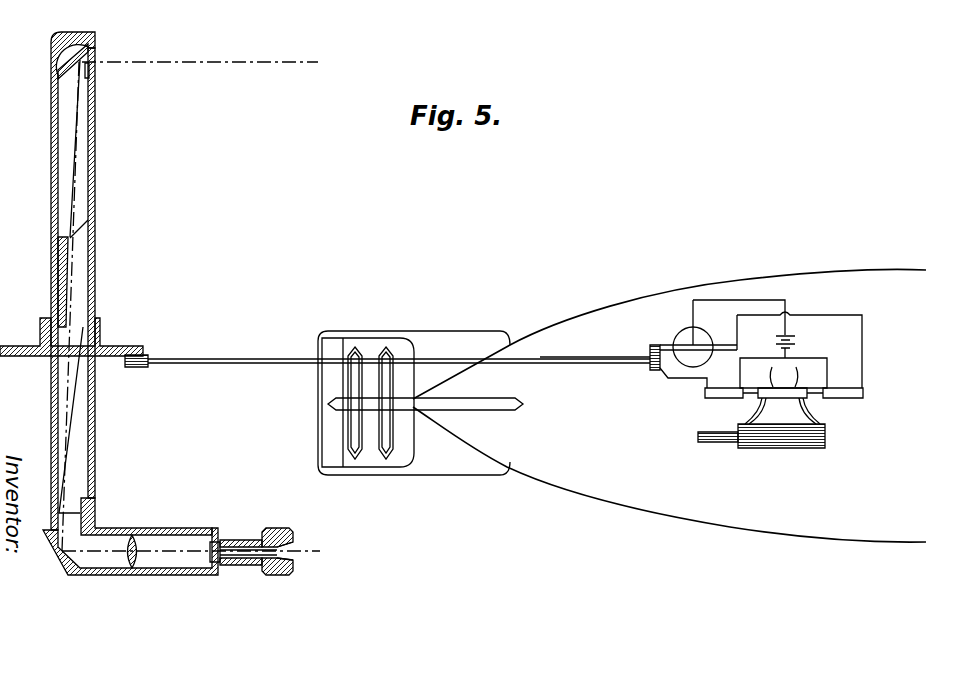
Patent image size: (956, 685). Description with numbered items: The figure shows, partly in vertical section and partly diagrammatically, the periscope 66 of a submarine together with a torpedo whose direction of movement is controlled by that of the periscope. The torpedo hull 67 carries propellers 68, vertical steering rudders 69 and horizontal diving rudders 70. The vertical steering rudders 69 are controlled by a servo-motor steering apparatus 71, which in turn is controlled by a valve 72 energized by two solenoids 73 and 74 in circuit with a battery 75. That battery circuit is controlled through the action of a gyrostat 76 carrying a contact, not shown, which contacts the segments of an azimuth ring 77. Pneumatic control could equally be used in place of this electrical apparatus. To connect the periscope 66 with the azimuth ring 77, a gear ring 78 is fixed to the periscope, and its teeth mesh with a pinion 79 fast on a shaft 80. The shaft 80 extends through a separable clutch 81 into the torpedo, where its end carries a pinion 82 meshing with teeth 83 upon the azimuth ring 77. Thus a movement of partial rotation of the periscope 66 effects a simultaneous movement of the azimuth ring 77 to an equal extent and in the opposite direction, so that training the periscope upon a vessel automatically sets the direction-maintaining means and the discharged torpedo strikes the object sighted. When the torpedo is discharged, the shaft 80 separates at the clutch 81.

The periscope 66 is at (98, 247).
The hull of a torpedo 67 is at (587, 480).
The propellers 68 is at (388, 443).
The vertical steering rudders 69 is at (330, 377).
The horizontal diving rudders 70 is at (470, 407).
The servo-motor steering apparatus 71 is at (773, 448).
The valve 72 is at (783, 392).
The solenoid 73 is at (707, 395).
The solenoid 74 is at (853, 398).
The battery 75 is at (795, 338).
The gyrostat 76 is at (705, 338).
The azimuth ring 77 is at (730, 350).
The gear ring 78 is at (13, 346).
The pinion 79 is at (130, 367).
The shaft 80 is at (236, 357).
The separable clutch 81 is at (542, 360).
The pinion 82 is at (657, 372).
The teeth 83 is at (653, 350).